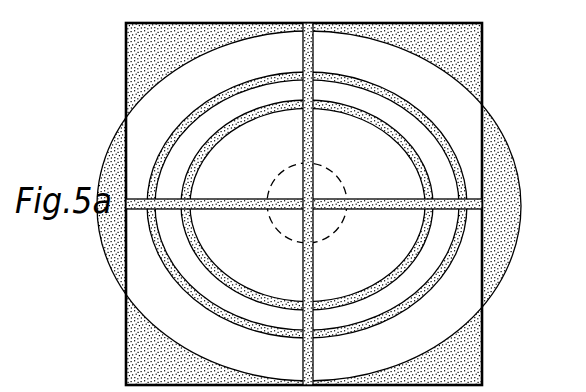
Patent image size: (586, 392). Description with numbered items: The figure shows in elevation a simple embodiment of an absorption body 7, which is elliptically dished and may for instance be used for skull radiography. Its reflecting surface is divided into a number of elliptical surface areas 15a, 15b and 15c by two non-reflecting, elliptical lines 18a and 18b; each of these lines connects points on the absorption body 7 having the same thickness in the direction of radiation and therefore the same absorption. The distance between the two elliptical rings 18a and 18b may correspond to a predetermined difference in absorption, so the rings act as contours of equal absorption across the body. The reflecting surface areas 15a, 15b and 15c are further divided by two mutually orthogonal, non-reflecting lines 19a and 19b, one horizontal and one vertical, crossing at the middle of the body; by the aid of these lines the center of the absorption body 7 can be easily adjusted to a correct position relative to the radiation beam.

The absorption body 7 is at (468, 67).
The reflecting surface area 15a is at (468, 150).
The reflecting surface area 15b is at (436, 248).
The reflecting surface area 15c is at (381, 255).
The non-reflecting elliptical line 18a is at (371, 84).
The non-reflecting elliptical line 18b is at (398, 145).
The non-reflecting line 19a is at (225, 210).
The non-reflecting line 19b is at (303, 143).